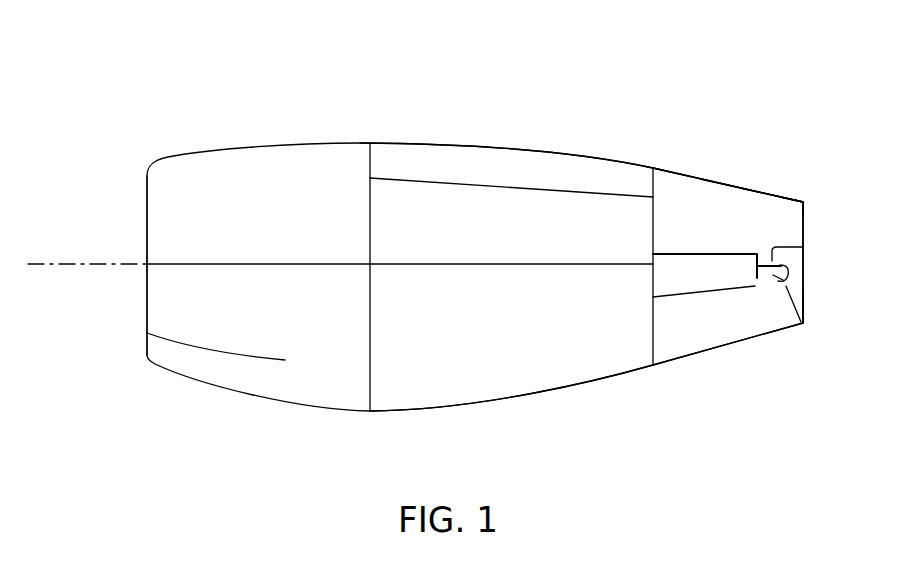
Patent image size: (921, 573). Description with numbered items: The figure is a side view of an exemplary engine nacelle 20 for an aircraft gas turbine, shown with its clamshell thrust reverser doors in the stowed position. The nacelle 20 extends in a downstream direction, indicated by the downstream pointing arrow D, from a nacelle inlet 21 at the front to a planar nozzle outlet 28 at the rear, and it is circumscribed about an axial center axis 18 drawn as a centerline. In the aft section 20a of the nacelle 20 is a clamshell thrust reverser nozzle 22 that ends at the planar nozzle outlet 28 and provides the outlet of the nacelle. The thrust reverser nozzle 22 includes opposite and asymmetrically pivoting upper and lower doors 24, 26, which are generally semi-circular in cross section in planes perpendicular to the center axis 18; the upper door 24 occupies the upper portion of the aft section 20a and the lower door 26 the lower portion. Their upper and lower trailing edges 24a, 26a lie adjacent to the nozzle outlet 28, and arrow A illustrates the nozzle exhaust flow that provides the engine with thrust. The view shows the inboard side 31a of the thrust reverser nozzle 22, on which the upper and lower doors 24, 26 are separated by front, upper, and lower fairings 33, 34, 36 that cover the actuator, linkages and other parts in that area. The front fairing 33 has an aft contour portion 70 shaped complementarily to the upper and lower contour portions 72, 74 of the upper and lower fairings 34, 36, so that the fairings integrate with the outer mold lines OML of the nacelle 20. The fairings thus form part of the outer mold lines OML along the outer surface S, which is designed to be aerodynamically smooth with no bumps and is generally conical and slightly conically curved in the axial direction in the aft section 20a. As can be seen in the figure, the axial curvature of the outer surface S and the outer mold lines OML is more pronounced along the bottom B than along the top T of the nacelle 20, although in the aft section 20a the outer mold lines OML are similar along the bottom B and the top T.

The axial center axis 18 is at (90, 263).
The engine nacelle 20 is at (223, 126).
The aft section 20a is at (682, 146).
The nacelle inlet 21 is at (147, 187).
The clamshell thrust reverser nozzle 22 is at (709, 182).
The upper door 24 is at (766, 194).
The upper trailing edge 24a is at (803, 208).
The lower door 26 is at (786, 318).
The lower trailing edge 26a is at (803, 307).
The planar nozzle outlet 28 is at (803, 230).
The inboard side 31a is at (790, 203).
The front fairing 33 is at (670, 291).
The upper fairing 34 is at (773, 291).
The lower fairing 36 is at (787, 289).
The aft contour portion 70 is at (738, 277).
The upper contour portion 72 is at (763, 258).
The lower contour portion 74 is at (767, 273).
The downstream pointing arrow D is at (433, 80).
The top T is at (457, 145).
The bottom B is at (489, 405).
The outer surface S is at (657, 228).
The arrow A is at (822, 264).
The outer mold lines OML is at (744, 183).